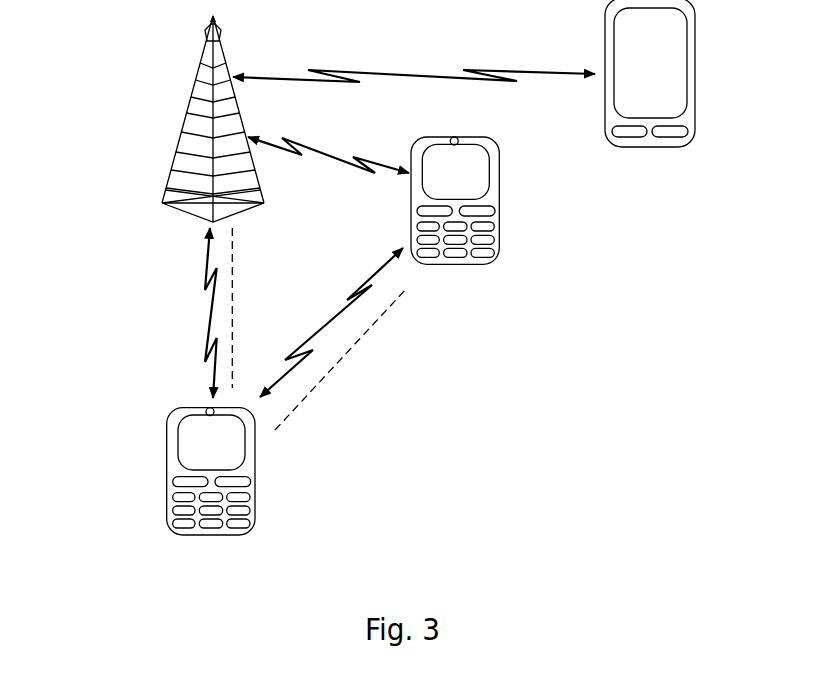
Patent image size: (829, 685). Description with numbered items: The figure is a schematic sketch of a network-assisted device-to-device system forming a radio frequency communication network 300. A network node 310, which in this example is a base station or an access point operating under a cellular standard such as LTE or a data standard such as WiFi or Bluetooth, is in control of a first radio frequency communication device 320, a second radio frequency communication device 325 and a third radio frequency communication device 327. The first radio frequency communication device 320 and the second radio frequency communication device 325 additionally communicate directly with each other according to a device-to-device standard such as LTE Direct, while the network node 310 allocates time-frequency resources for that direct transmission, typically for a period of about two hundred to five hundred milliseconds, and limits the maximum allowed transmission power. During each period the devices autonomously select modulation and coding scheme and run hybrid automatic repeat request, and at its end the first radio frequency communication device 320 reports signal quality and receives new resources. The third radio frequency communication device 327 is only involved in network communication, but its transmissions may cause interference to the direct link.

The radio frequency communication network 300 is at (122, 67).
The network node 310 is at (183, 208).
The first radio frequency communication device 320 is at (210, 535).
The second radio frequency communication device 325 is at (454, 264).
The third radio frequency communication device 327 is at (650, 147).